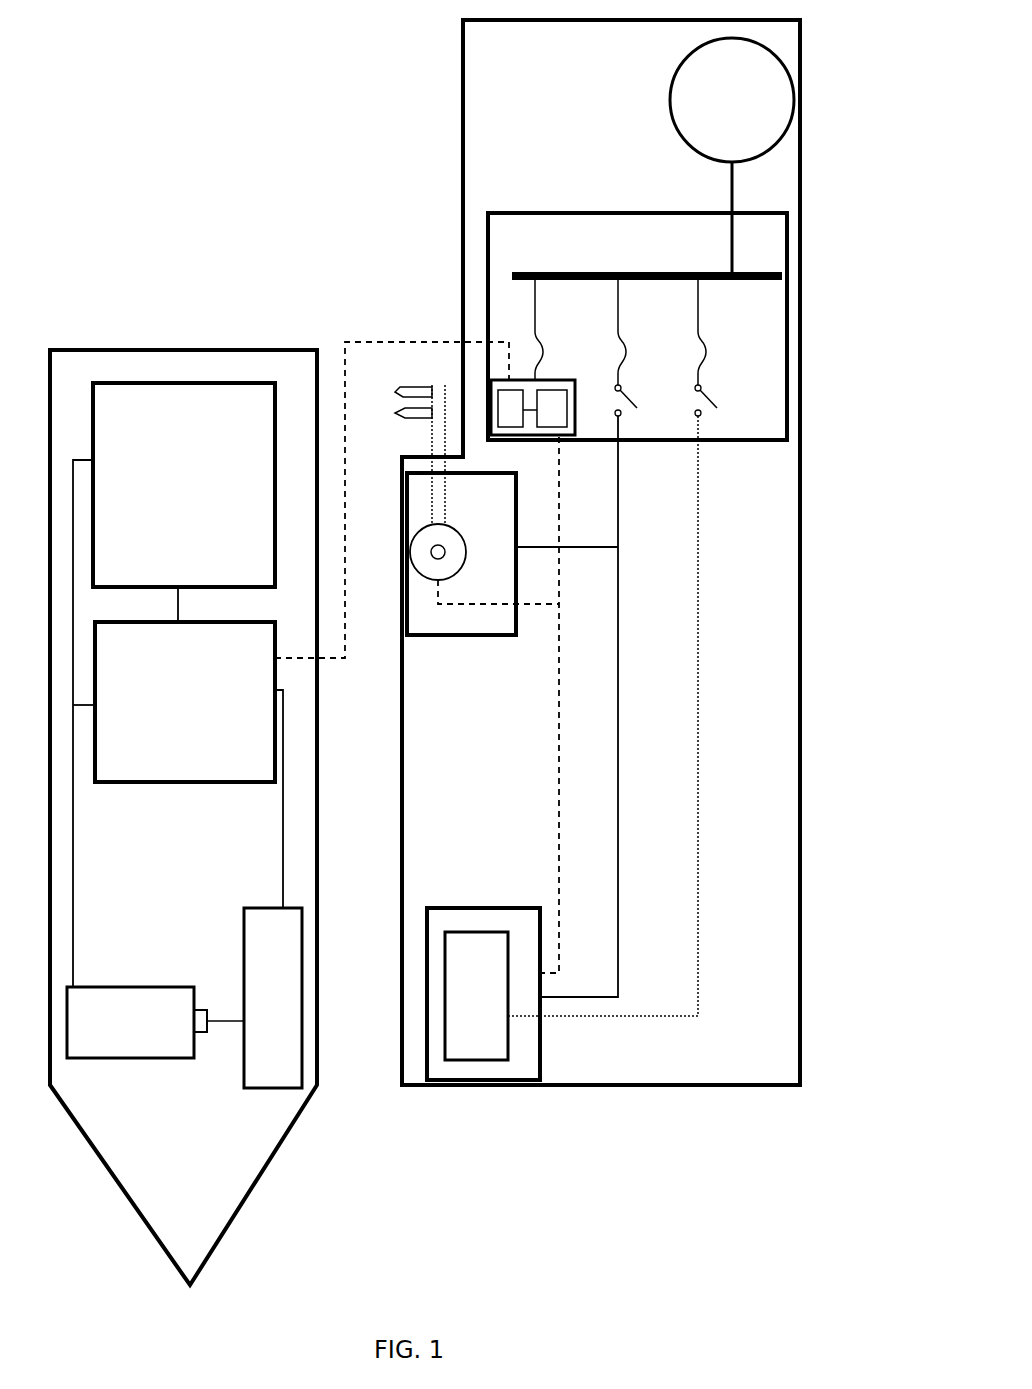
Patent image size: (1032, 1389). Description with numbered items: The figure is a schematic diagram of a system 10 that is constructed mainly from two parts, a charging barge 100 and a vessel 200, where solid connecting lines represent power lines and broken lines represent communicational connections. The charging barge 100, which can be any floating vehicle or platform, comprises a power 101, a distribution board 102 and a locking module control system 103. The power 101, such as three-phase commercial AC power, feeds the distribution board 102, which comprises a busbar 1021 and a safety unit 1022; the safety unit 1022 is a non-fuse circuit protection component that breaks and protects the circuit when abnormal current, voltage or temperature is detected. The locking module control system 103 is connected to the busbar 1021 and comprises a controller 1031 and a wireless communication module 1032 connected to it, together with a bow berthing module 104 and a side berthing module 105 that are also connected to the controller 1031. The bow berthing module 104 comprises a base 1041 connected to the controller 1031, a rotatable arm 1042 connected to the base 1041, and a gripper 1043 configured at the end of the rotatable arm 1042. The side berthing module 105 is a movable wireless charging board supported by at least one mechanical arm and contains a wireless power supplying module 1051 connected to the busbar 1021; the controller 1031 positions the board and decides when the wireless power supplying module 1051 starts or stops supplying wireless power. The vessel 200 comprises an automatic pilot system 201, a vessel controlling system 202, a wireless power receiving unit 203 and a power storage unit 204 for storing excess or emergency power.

The system 10 is at (90, 141).
The charging barge 100 is at (601, 552).
The power 101 is at (732, 157).
The distribution board 102 is at (637, 326).
The busbar 1021 is at (783, 276).
The safety unit 1022 is at (703, 352).
The locking module control system 103 is at (513, 380).
The controller 1031 is at (552, 405).
The wireless communication module 1032 is at (513, 418).
The bow berthing module 104 is at (461, 554).
The base 1041 is at (453, 558).
The rotatable arm 1042 is at (430, 450).
The gripper 1043 is at (421, 392).
The side berthing module 105 is at (484, 994).
The wireless power supplying module 1051 is at (478, 996).
The vessel 200 is at (183, 817).
The automatic pilot system 201 is at (184, 485).
The vessel controlling system 202 is at (185, 702).
The wireless power receiving unit 203 is at (273, 998).
The power storage unit 204 is at (155, 1022).